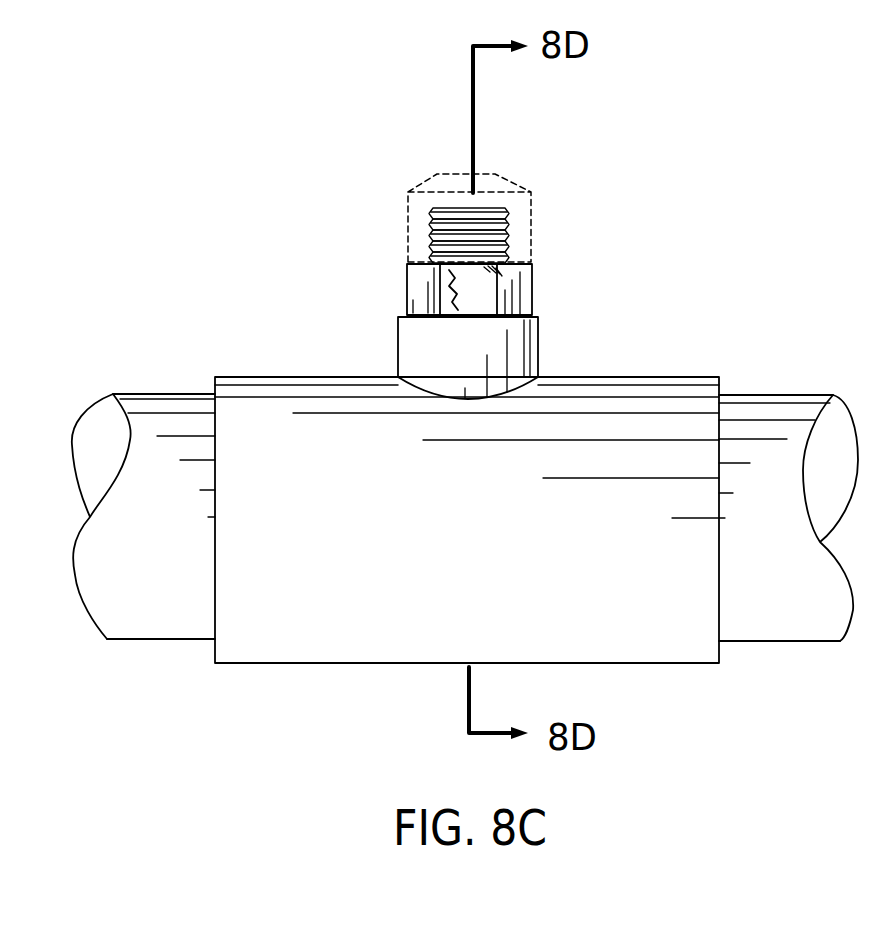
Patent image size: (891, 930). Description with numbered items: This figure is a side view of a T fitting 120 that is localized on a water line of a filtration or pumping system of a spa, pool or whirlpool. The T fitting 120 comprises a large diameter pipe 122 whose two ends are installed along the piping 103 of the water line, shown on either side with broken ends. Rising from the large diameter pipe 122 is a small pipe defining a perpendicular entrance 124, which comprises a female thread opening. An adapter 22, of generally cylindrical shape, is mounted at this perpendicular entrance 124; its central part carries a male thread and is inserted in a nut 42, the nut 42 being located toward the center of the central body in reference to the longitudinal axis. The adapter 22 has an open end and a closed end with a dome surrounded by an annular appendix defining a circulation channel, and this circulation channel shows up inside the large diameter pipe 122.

The adapter 22 is at (451, 161).
The nut 42 is at (533, 278).
The piping 103 is at (755, 413).
The T fitting 120 is at (657, 325).
The large diameter pipe 122 is at (284, 450).
The perpendicular entrance 124 is at (413, 357).